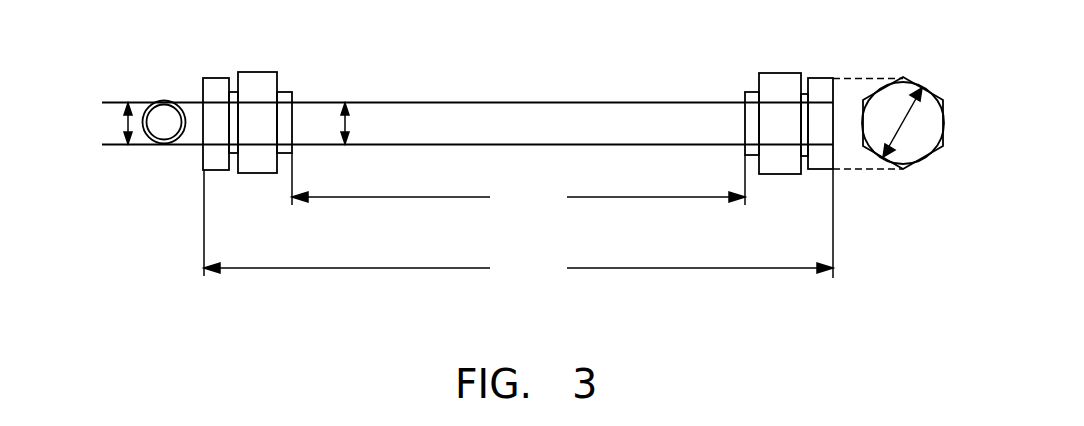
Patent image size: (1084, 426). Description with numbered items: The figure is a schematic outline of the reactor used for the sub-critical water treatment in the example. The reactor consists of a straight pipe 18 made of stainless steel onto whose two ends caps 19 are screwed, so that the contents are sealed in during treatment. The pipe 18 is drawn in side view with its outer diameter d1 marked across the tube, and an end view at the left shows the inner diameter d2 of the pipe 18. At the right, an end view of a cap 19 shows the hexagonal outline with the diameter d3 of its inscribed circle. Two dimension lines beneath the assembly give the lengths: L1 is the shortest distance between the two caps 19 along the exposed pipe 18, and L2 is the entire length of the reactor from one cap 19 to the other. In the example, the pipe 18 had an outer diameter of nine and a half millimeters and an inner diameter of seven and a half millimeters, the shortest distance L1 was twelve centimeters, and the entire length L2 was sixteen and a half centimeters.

The pipe 18 is at (476, 108).
The cap 19 is at (230, 118).
The outer diameter of the pipe d1 is at (365, 138).
The inner diameter of the pipe d2 is at (128, 123).
The diameter of inscribed circle of the cap d3 is at (890, 140).
The shortest distance between the caps L1 is at (518, 186).
The entire length of the reactor L2 is at (518, 230).